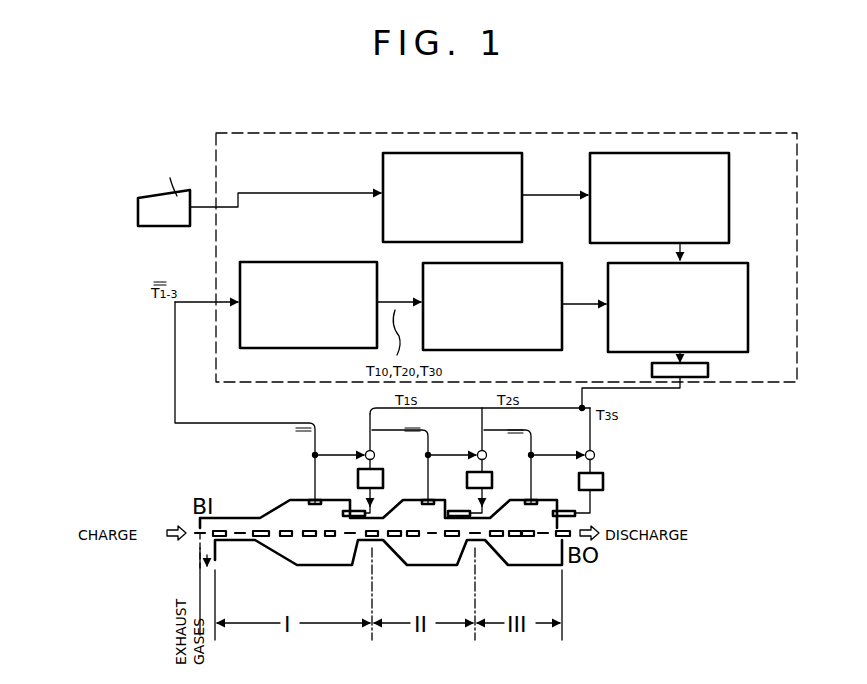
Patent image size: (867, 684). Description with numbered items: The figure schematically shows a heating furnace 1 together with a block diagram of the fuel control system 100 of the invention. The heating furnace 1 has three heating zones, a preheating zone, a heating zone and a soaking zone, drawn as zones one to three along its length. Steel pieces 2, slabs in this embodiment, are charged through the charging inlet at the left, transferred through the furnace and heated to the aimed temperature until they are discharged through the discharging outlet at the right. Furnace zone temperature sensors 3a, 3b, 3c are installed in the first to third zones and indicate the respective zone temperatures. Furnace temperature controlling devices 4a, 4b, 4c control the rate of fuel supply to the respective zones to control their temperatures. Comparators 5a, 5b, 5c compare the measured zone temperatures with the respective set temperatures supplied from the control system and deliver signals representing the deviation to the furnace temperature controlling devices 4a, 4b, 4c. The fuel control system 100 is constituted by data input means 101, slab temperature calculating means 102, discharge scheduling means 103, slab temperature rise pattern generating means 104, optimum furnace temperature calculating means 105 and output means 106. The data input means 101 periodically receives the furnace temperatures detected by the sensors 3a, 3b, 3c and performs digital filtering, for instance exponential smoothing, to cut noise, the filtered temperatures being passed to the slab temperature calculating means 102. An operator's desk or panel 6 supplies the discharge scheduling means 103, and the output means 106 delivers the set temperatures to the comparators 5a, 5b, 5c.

The heating furnace 1 is at (280, 507).
The steel pieces 2 is at (283, 538).
The furnace zone temperature sensor 3a is at (311, 498).
The furnace zone temperature sensor 3b is at (424, 498).
The furnace zone temperature sensor 3c is at (528, 498).
The furnace temperature controlling device 4a is at (357, 484).
The furnace temperature controlling device 4b is at (467, 484).
The furnace temperature controlling device 4c is at (604, 486).
The comparator 5a is at (374, 446).
The comparator 5b is at (486, 443).
The comparator 5c is at (593, 443).
The operator's desk 6 is at (163, 228).
The fuel control system 100 is at (356, 123).
The data input means 101 is at (277, 261).
The slab temperature calculating means 102 is at (423, 290).
The discharge scheduling means 103 is at (381, 175).
The slab temperature rise pattern generating means 104 is at (588, 178).
The optimum furnace temperature calculating means 105 is at (606, 290).
The output means 106 is at (708, 370).